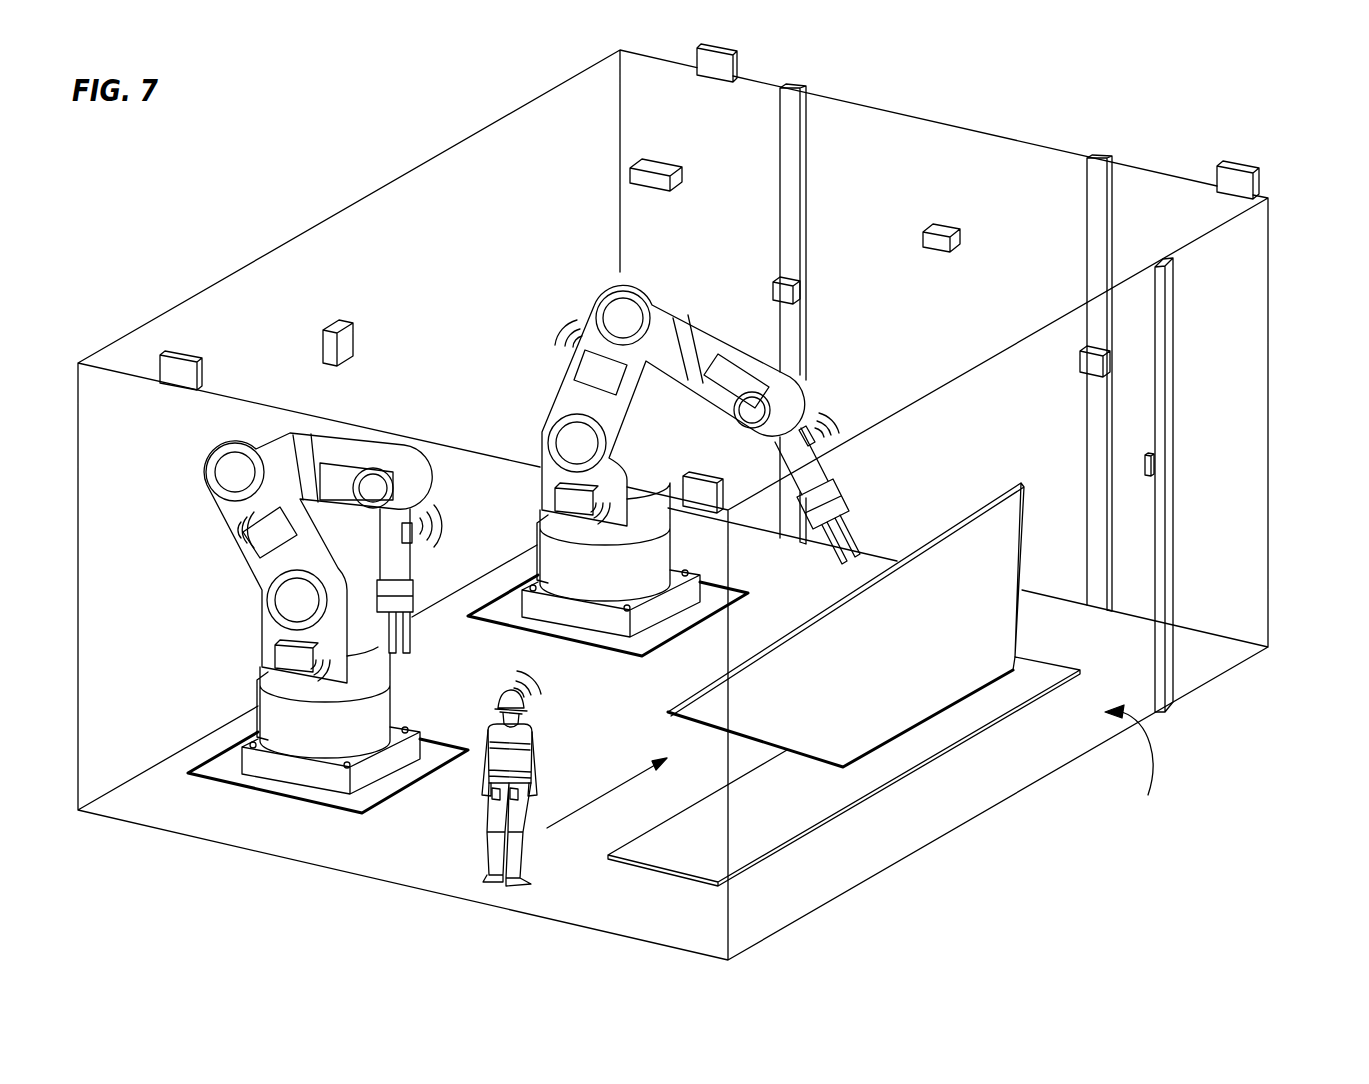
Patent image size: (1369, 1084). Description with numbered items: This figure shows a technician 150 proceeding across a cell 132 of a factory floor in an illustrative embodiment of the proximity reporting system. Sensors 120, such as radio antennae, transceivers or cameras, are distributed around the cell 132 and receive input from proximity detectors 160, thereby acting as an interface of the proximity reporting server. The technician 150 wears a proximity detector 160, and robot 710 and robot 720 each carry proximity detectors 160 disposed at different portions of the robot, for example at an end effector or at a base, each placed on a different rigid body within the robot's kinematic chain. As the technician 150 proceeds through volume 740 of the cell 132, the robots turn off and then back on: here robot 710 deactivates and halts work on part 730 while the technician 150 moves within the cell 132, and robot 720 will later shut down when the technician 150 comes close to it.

The sensors 120 is at (157, 372).
The cell 132 is at (1270, 313).
The technician 150 is at (490, 835).
The proximity detectors 160 is at (262, 543).
The robot 710 is at (288, 720).
The robot 720 is at (580, 583).
The part 730 is at (1026, 502).
The volume 740 is at (858, 771).